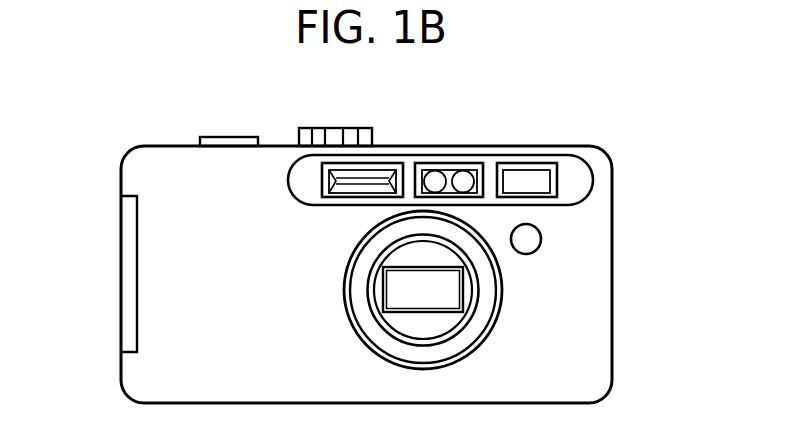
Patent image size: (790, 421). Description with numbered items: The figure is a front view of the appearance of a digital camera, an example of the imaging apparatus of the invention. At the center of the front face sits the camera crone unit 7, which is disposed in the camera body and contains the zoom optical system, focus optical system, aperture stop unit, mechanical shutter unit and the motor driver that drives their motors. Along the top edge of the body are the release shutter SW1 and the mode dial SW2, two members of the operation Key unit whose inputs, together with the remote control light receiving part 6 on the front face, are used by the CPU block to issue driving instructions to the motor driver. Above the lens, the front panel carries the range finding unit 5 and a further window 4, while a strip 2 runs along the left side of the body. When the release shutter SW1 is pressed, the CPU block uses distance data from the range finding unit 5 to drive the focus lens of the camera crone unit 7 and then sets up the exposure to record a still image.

The grip 2 is at (121, 245).
The release shutter SW1 is at (233, 137).
The mode dial SW2 is at (340, 128).
The range finding unit 5 is at (388, 182).
The finder window 4 is at (520, 178).
The remote control light receiving part 6 is at (531, 242).
The camera crone unit 7 is at (440, 325).